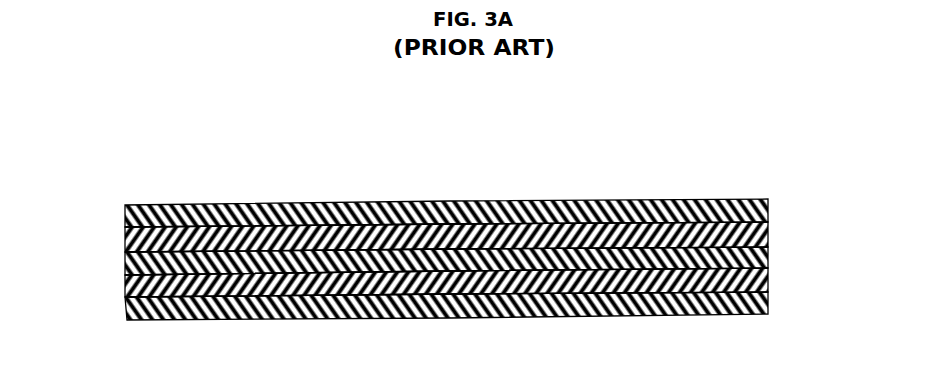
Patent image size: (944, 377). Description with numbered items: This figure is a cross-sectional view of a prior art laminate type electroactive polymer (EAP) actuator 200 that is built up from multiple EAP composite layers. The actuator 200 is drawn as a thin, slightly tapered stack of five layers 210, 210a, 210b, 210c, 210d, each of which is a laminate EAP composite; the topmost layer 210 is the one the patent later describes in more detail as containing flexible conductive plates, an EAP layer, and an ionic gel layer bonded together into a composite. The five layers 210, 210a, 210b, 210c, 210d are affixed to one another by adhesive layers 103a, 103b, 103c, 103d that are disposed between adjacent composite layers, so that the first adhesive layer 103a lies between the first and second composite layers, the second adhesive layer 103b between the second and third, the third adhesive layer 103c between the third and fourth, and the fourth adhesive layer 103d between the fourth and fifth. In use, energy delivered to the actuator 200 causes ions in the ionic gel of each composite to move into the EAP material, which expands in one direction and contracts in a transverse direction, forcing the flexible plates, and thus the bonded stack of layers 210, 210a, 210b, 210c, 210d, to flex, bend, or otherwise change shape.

The EAP actuator 200 is at (157, 141).
The layer 210 is at (748, 206).
The layer 210a is at (768, 231).
The layer 210b is at (768, 254).
The layer 210c is at (768, 277).
The layer 210d is at (768, 301).
The adhesive layer 103a is at (125, 225).
The adhesive layer 103b is at (125, 251).
The adhesive layer 103c is at (125, 274).
The adhesive layer 103d is at (127, 297).